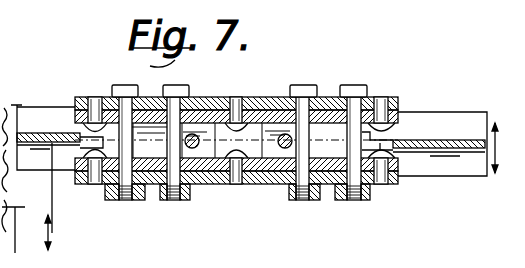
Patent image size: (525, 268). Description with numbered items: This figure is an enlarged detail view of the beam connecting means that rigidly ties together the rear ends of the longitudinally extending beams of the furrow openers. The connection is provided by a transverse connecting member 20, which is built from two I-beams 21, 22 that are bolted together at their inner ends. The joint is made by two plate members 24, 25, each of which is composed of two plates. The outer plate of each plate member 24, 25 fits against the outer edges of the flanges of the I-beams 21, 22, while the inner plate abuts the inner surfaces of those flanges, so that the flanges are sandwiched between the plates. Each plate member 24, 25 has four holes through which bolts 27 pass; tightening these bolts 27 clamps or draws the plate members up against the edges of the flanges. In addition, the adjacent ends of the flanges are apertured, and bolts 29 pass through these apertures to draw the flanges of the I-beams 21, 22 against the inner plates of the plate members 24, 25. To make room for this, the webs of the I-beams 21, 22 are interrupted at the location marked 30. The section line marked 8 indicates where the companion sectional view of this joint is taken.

The transverse connecting member 20 is at (93, 207).
The I-beam 21 is at (28, 108).
The I-beam 22 is at (463, 138).
The plate member 24 is at (280, 93).
The plate member 25 is at (281, 148).
The bolt 27 is at (311, 96).
The bolt 29 is at (196, 148).
The web interruption 30 is at (82, 121).
The section line 8- 8 is at (257, 188).